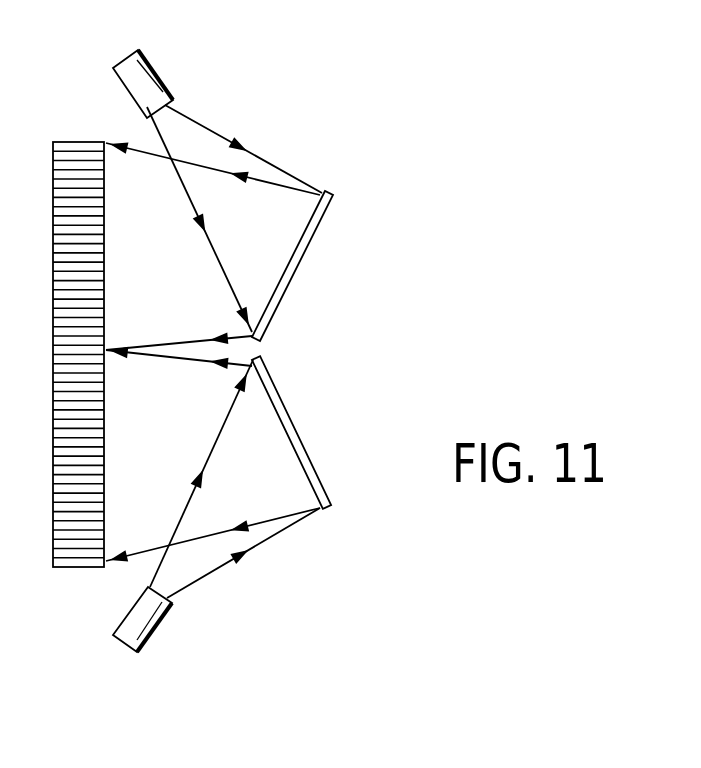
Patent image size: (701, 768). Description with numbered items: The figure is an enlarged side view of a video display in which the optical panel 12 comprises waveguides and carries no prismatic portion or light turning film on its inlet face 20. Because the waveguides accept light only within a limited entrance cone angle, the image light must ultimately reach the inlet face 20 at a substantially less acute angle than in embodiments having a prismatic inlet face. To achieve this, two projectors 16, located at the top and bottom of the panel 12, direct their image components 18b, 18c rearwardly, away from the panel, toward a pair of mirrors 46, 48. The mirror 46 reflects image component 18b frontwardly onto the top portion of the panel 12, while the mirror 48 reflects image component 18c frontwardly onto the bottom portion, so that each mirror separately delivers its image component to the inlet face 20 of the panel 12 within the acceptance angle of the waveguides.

The optical panel 12 is at (70, 135).
The projectors 16 is at (160, 72).
The image component 18b is at (193, 140).
The image component 18c is at (200, 560).
The inlet face 20 is at (105, 245).
The mirror 46 is at (302, 270).
The mirror 48 is at (302, 438).